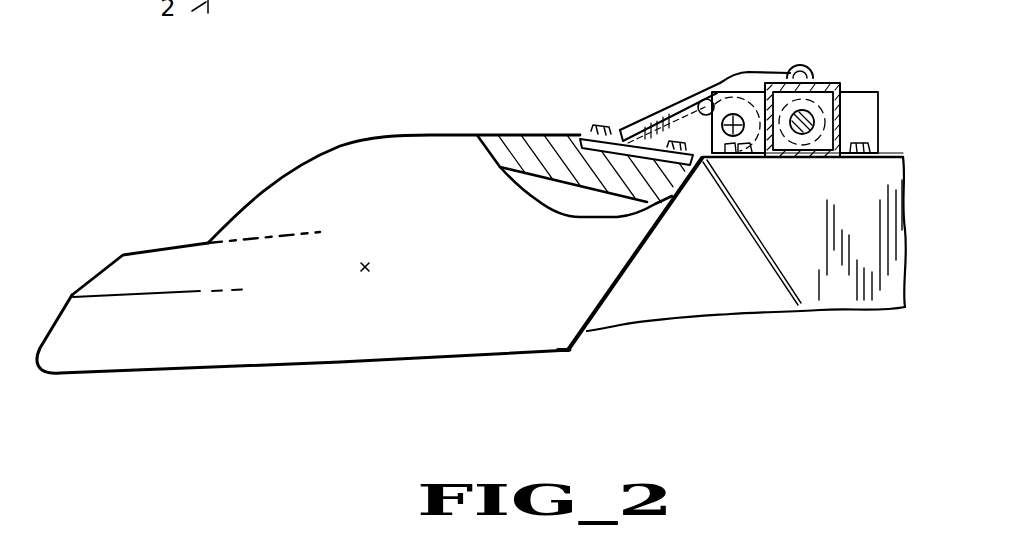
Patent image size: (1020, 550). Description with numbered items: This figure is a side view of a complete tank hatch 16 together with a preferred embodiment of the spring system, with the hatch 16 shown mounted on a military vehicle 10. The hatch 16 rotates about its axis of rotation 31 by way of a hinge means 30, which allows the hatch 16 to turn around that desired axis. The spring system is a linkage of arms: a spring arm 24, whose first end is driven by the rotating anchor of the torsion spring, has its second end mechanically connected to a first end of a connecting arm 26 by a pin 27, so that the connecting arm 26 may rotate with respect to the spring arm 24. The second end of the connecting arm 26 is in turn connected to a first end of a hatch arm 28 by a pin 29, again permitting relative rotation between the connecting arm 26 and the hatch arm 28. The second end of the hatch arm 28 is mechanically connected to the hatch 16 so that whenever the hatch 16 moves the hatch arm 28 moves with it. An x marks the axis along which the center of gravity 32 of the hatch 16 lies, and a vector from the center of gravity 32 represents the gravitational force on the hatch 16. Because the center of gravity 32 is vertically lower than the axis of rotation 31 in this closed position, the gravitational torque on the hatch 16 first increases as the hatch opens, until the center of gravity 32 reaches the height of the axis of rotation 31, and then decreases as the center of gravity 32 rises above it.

The military vehicle 10 is at (732, 253).
The tank hatch 16 is at (373, 250).
The spring arm 24 is at (812, 72).
The connecting arm 26 is at (750, 82).
The pin 27 is at (798, 72).
The hatch arm 28 is at (673, 105).
The pin 29 is at (707, 102).
The hinge means 30 is at (643, 132).
The axis of rotation 31 is at (738, 135).
The center of gravity 32 is at (369, 267).